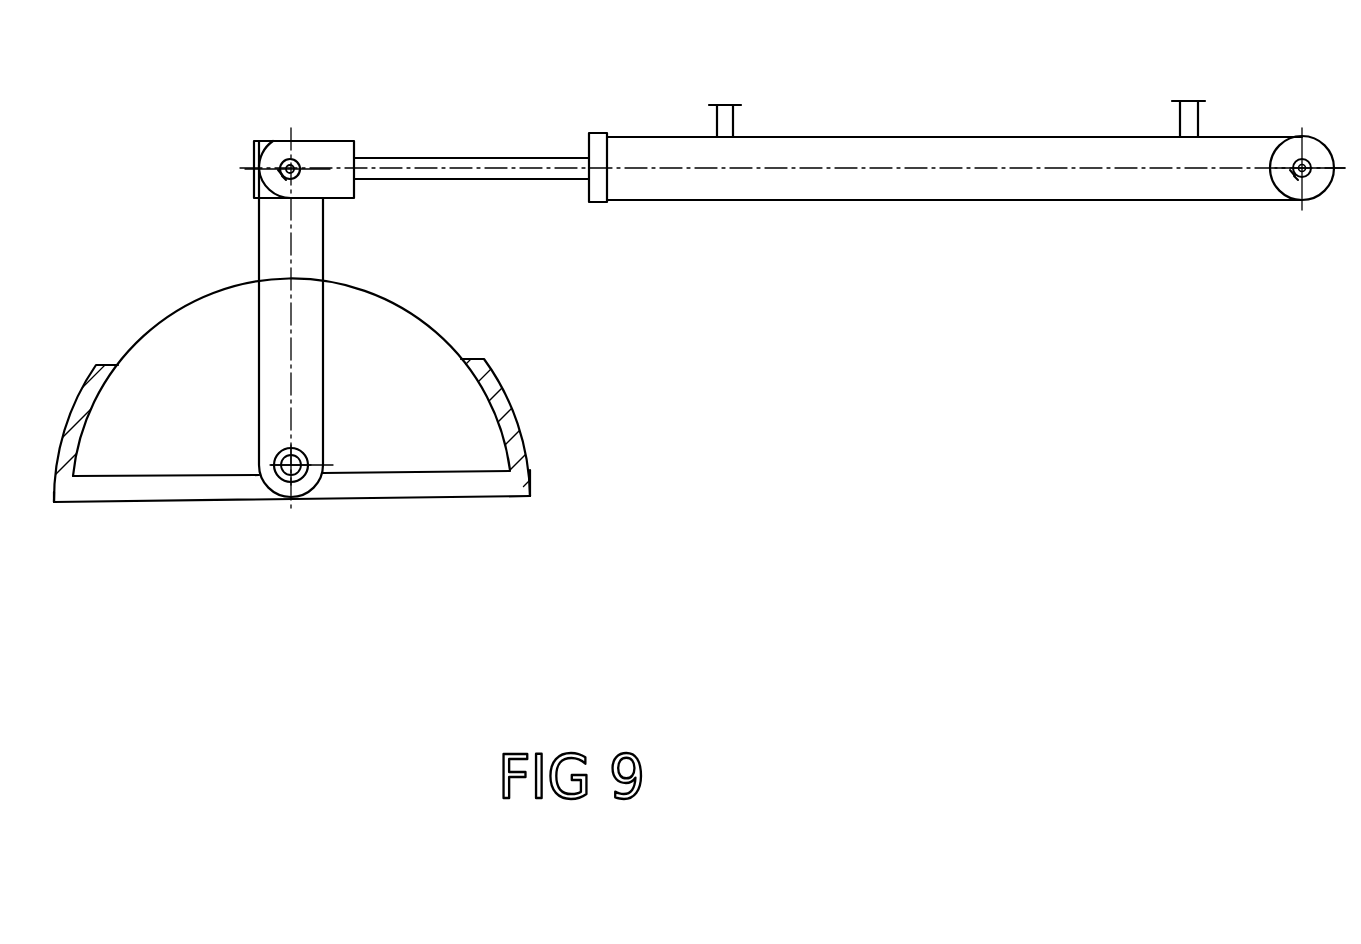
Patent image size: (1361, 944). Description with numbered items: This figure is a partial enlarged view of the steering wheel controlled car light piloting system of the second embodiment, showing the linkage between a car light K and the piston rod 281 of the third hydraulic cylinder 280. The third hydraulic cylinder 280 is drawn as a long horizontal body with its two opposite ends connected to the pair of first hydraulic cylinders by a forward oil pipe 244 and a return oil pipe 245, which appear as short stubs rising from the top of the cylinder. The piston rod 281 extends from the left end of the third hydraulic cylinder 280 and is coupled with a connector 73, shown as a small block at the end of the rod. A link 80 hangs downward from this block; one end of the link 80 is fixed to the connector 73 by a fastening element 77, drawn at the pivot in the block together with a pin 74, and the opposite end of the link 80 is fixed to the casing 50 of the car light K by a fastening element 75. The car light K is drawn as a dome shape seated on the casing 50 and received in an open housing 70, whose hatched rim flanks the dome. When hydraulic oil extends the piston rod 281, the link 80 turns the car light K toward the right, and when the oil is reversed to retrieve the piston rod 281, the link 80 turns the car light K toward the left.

The car light K is at (398, 345).
The open housing 70 is at (508, 422).
The casing 50 is at (455, 482).
The link 80 is at (307, 247).
The fastening element 75 is at (302, 477).
The connector 73 is at (345, 147).
The fastening element 77 is at (285, 160).
The upper pivot pin 74 is at (298, 165).
The piston rod 281 is at (513, 163).
The third hydraulic cylinder 280 is at (952, 152).
The return oil pipe 245 is at (733, 126).
The forward oil pipe 244 is at (1193, 117).